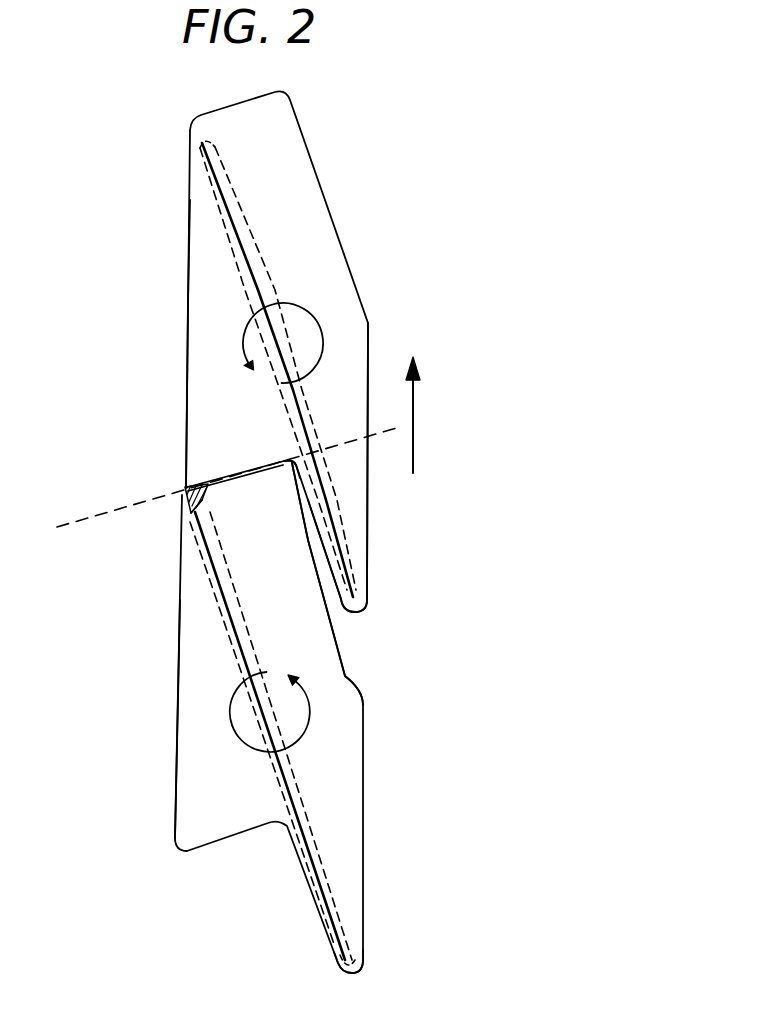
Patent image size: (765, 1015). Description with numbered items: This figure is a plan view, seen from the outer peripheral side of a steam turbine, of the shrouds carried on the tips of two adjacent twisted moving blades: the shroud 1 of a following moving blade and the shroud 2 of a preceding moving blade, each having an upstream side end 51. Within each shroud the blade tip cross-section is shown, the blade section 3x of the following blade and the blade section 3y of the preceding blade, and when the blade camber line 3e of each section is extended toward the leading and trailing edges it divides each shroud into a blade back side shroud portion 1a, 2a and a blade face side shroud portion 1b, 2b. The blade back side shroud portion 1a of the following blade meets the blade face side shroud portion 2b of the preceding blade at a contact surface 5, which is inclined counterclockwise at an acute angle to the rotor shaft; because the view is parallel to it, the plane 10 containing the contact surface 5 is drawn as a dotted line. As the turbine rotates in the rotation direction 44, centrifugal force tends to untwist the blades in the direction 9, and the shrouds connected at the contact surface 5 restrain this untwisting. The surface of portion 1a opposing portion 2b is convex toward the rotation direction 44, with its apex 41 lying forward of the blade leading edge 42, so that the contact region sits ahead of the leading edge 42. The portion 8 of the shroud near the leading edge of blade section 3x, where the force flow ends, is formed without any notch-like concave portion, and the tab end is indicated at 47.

The shroud of following moving blade 1 is at (345, 788).
The blade back side shroud portion 1a is at (341, 668).
The blade face side shroud portion 1b is at (192, 794).
The shroud of preceding moving blade 2 is at (193, 227).
The blade back side shroud portion 2a is at (341, 283).
The blade face side shroud portion 2b is at (190, 365).
The blade camber line 3e is at (228, 208).
The blade section at blade tip of following moving blade 3x is at (226, 585).
The blade section at blade tip of preceding moving blade 3y is at (266, 263).
The contact surface 5 is at (232, 476).
The portion of shroud near blade leading edge 8 is at (184, 507).
The untwisting direction 9 is at (323, 345).
The plane including the contact surface 10 is at (100, 512).
The apex of convex shape 41 is at (280, 468).
The blade leading edge 42 is at (186, 522).
The rotation direction 44 is at (428, 422).
The end portion of tab 47 is at (359, 971).
The upstream side end 51 is at (185, 270).